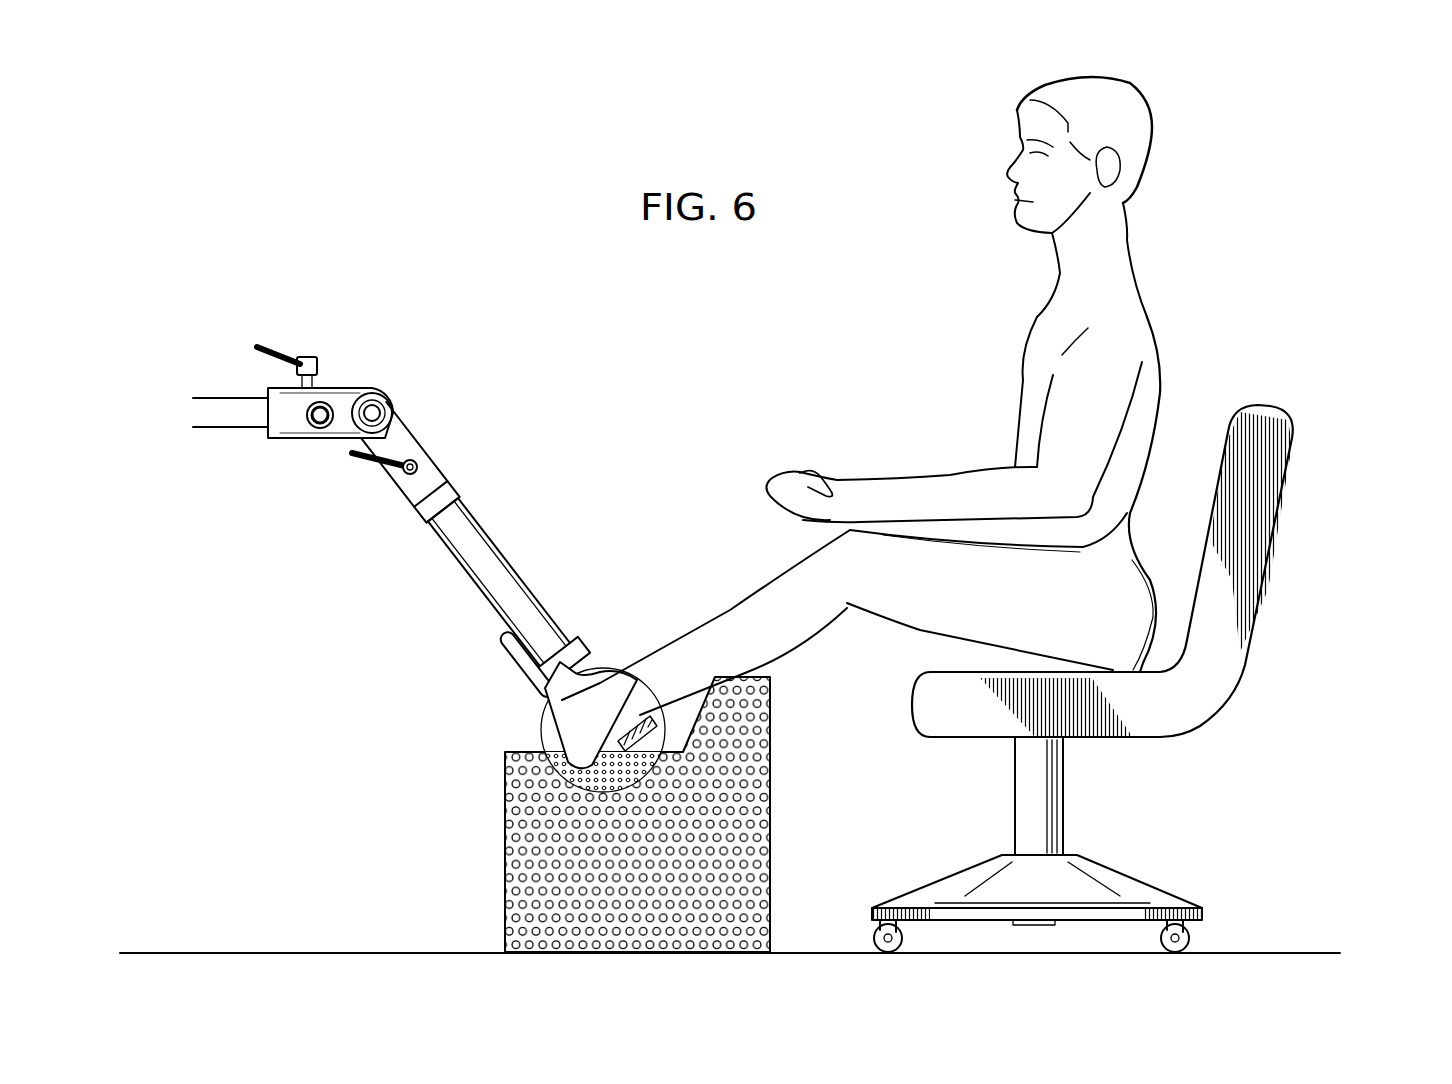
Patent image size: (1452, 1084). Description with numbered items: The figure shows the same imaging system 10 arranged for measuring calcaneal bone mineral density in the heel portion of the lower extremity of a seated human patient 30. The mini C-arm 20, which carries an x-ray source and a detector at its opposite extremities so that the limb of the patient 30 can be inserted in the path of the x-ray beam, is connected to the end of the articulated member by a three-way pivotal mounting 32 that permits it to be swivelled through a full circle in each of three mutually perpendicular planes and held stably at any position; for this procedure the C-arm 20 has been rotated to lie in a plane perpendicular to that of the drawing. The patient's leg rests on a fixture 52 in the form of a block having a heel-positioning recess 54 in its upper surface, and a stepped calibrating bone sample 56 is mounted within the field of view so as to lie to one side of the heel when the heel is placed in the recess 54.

The imaging system 10 is at (415, 530).
The mini C-arm 20 is at (484, 533).
The human patient 30 is at (1040, 343).
The 3-way pivotal mounting 32 is at (346, 388).
The fixture 52 is at (773, 800).
The heel-positioning recess 54 is at (552, 749).
The stepped calibrating bone sample 56 is at (648, 708).